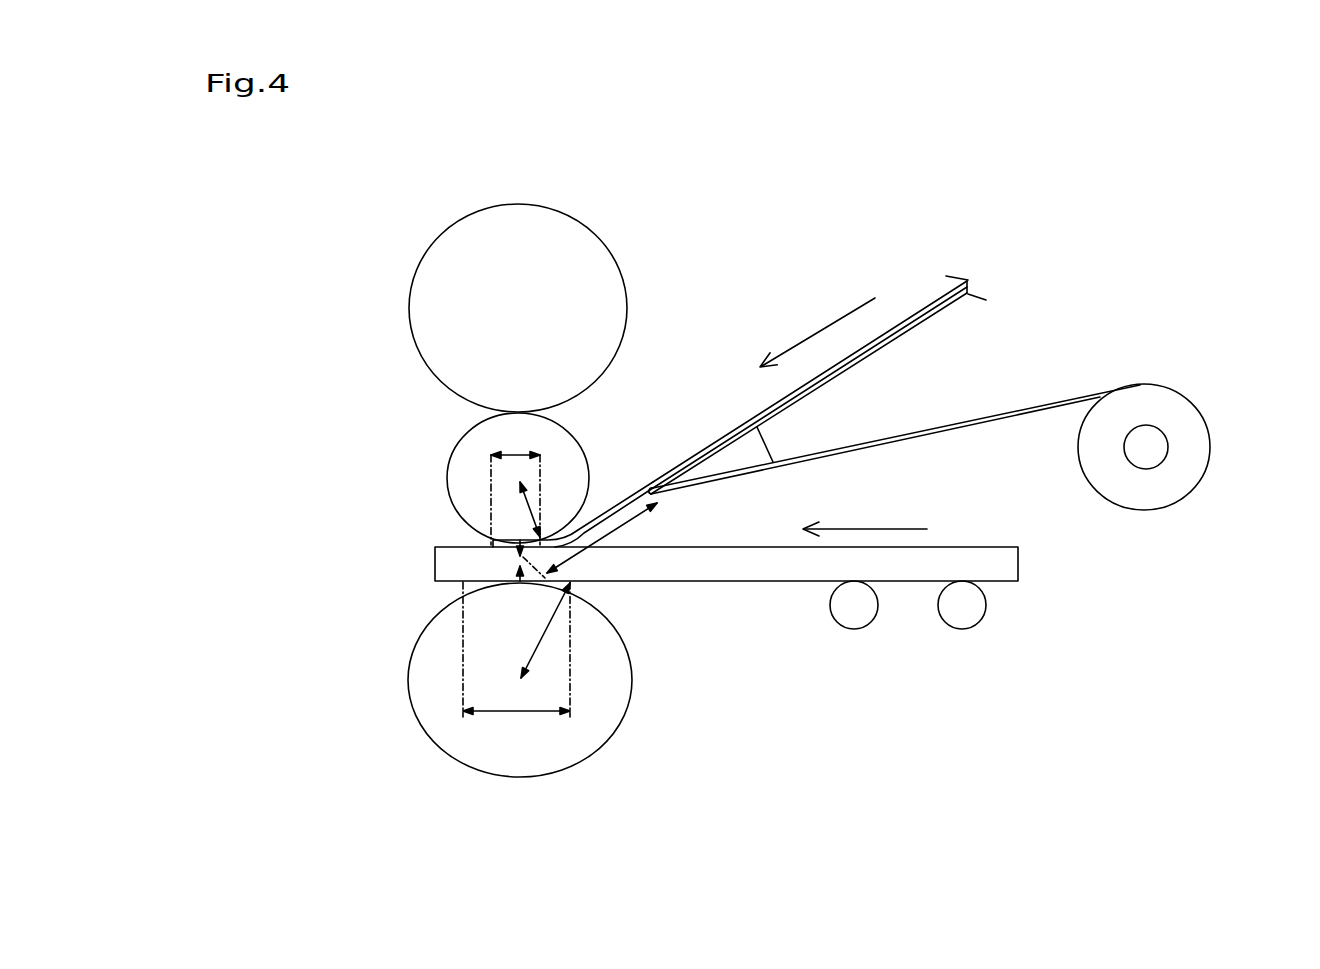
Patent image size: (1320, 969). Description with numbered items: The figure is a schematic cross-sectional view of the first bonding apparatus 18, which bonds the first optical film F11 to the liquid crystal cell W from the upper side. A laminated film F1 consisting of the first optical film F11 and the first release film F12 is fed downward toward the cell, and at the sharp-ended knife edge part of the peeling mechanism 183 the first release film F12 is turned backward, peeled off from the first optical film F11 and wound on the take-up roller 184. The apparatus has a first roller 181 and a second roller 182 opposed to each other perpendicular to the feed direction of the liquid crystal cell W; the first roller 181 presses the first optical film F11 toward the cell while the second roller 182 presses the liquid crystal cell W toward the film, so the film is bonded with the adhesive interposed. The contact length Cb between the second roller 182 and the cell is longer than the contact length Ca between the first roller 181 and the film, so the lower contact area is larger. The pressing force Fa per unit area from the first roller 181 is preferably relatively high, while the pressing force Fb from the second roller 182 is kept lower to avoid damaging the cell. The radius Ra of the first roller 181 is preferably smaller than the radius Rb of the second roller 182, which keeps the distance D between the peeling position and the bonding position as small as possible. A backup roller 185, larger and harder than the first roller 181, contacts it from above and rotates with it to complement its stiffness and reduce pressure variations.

The first bonding apparatus 18 is at (1152, 290).
The first roller 181 is at (447, 478).
The second roller 182 is at (410, 673).
The peeling mechanism 183 is at (740, 440).
The take-up roller 184 is at (1211, 447).
The backup roller 185 is at (408, 308).
The first optical film laminate F1 is at (923, 302).
The first optical film F11 is at (635, 487).
The first release film F12 is at (950, 430).
The liquid crystal cell W is at (1018, 559).
The distance D is at (623, 526).
The contact length Ca is at (516, 452).
The contact length Cb is at (520, 712).
The radius of the first roller Ra is at (533, 512).
The radius of the second roller Rb is at (543, 638).
The pressing force Fa is at (492, 546).
The pressing force Fb is at (517, 575).